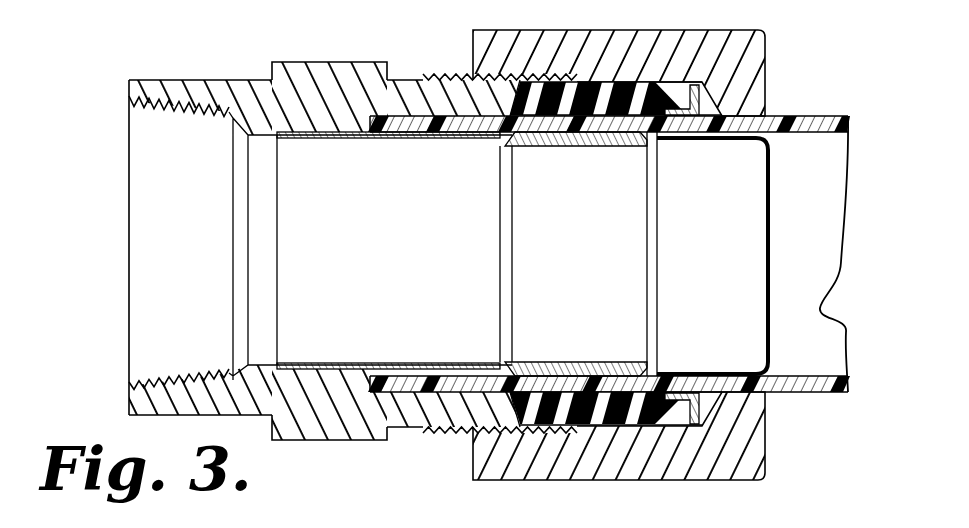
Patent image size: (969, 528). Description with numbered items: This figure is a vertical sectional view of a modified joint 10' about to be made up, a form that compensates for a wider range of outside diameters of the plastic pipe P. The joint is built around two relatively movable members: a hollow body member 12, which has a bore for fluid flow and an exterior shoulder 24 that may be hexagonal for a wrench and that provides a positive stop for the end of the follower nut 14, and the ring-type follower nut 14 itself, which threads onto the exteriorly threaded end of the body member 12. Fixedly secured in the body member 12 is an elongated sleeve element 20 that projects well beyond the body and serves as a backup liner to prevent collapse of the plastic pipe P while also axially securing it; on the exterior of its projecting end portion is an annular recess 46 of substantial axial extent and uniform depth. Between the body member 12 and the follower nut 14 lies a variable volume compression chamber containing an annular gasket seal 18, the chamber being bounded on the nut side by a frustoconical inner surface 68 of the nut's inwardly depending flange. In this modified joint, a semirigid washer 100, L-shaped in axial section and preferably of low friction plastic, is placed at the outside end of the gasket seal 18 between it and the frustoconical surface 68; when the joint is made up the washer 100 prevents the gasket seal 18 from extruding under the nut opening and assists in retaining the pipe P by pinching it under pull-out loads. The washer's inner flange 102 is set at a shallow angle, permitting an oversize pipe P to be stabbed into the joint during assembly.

The hollow body member 12 is at (197, 80).
The shoulder 24 is at (338, 62).
The follower nut 14 is at (772, 474).
The modified joint 10' is at (463, 300).
The plastic pipe P is at (821, 117).
The annular gasket seal 18 is at (700, 78).
The frustoconical inner surface 68 is at (703, 421).
The semirigid washer 100 is at (707, 100).
The sleeve element 20 is at (367, 363).
The annular recess 46 is at (565, 140).
The inner flange 102 is at (692, 375).